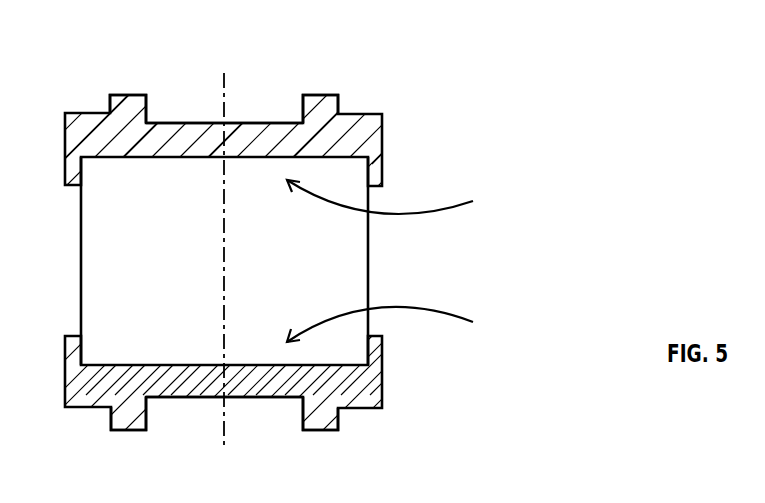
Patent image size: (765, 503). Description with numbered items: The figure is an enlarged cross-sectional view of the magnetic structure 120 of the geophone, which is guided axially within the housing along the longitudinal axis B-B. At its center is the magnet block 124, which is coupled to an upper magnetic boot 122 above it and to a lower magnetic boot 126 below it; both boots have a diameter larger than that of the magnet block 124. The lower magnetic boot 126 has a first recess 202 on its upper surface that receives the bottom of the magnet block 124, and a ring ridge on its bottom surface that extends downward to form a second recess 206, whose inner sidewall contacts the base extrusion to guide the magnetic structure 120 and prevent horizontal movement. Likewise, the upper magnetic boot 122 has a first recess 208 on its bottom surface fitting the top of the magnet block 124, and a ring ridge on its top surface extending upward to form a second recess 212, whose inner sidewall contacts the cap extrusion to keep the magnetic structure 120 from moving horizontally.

The magnetic structure 120 is at (299, 262).
The upper magnetic boot 122 is at (355, 141).
The magnet block 124 is at (332, 268).
The lower magnetic boot 126 is at (362, 387).
The first recess 202 is at (403, 324).
The second recess 206 is at (182, 413).
The first recess 208 is at (403, 197).
The second recess 212 is at (185, 113).